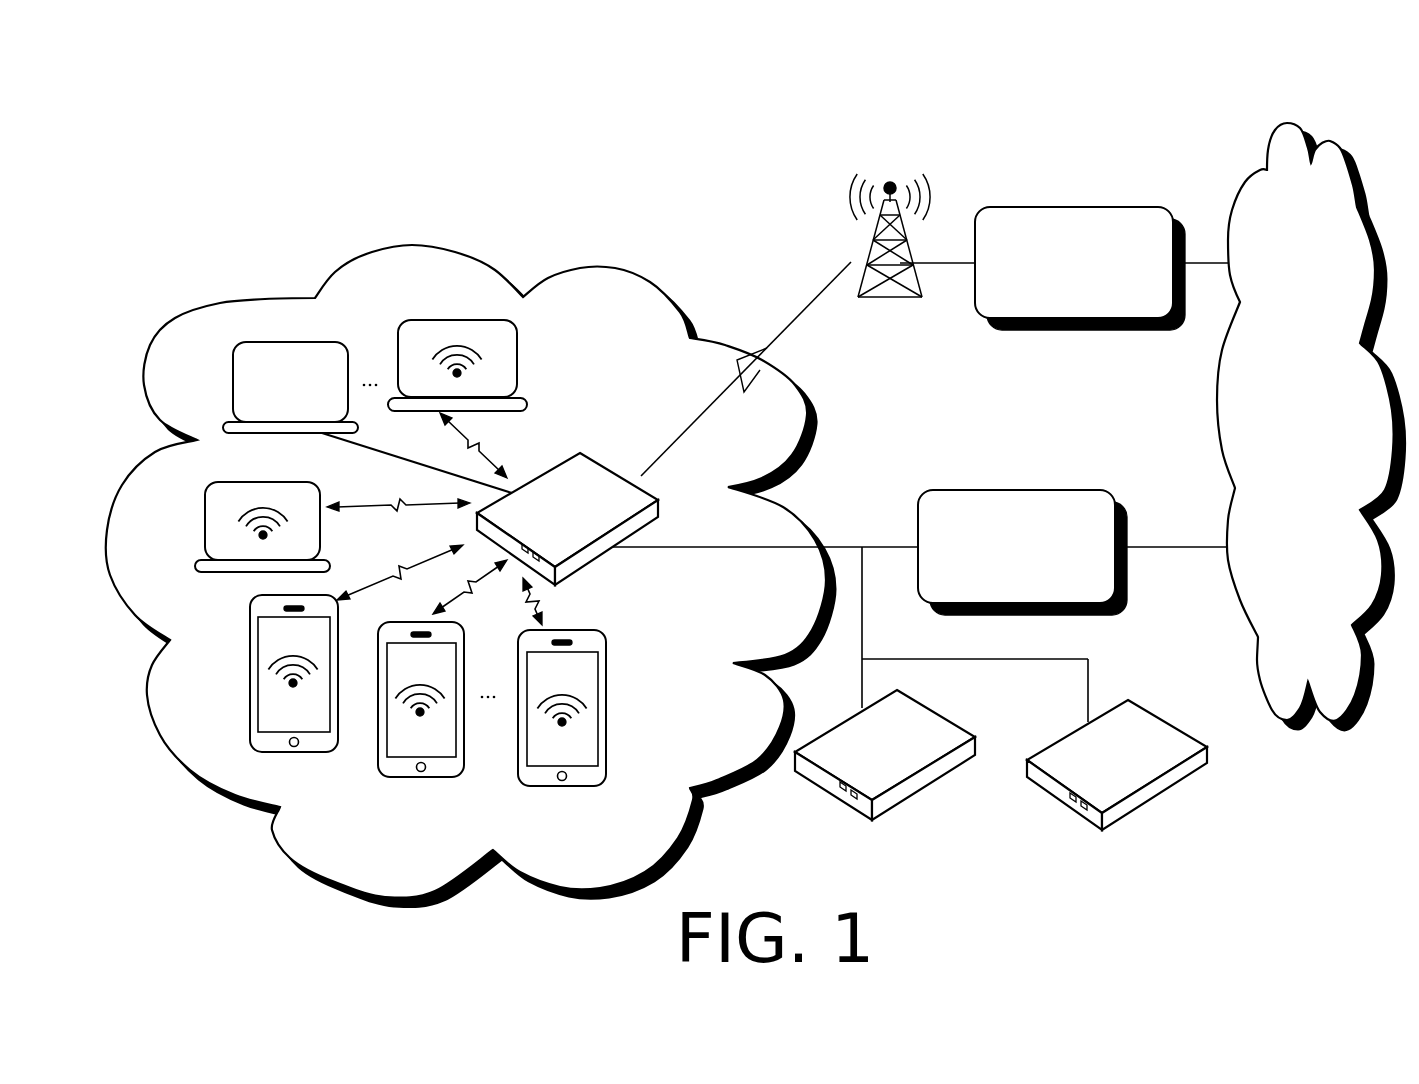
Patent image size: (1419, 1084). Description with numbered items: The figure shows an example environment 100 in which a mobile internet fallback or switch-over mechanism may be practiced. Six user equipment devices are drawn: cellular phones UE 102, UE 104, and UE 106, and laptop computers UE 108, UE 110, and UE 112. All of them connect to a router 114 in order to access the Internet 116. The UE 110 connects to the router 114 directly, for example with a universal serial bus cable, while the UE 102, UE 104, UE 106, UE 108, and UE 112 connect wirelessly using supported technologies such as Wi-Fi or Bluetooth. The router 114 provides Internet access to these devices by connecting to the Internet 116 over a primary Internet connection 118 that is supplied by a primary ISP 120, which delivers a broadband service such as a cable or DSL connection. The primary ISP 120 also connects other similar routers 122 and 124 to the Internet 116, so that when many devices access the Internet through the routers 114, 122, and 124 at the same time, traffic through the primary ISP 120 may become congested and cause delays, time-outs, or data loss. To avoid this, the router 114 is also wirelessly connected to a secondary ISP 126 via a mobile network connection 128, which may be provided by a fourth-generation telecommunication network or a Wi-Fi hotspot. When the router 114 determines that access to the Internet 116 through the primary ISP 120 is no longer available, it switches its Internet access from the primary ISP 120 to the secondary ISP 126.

The environment 100 is at (295, 92).
The UE 102 is at (329, 782).
The UE 104 is at (458, 809).
The UE 106 is at (599, 818).
The UE 108 is at (298, 477).
The UE 110 is at (329, 338).
The UE 112 is at (493, 315).
The router 114 is at (572, 437).
The Internet 116 is at (1284, 452).
The primary Internet connection 118 is at (702, 632).
The primary ISP 120 is at (998, 574).
The router 122 is at (925, 865).
The router 124 is at (1175, 865).
The secondary ISP 126 is at (1055, 289).
The mobile network connection 128 is at (779, 314).